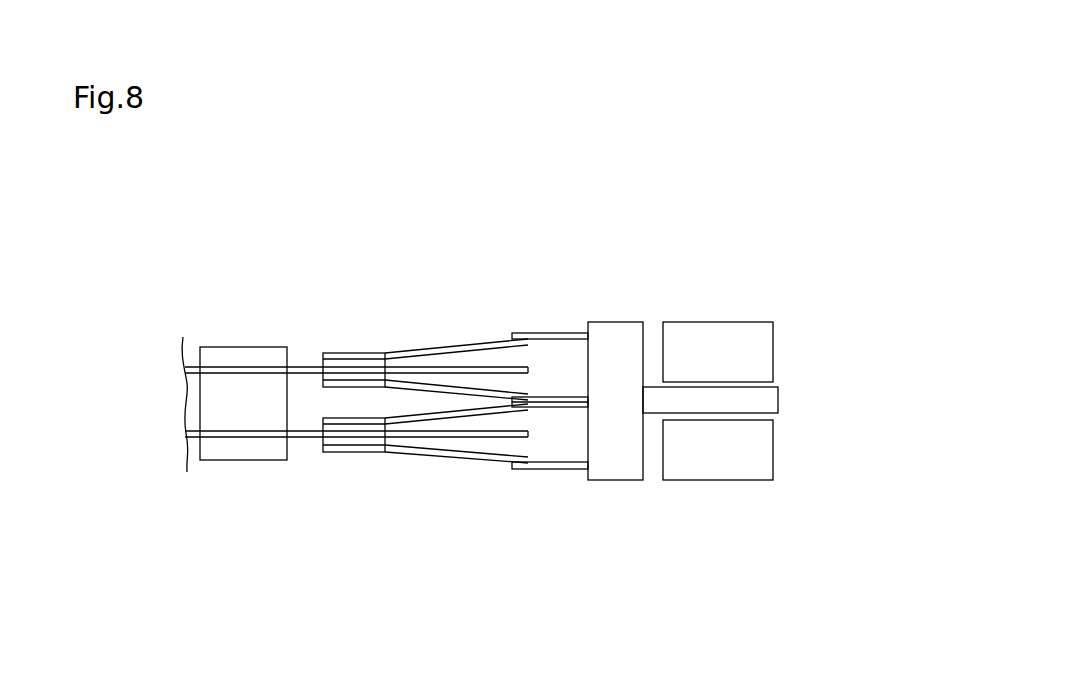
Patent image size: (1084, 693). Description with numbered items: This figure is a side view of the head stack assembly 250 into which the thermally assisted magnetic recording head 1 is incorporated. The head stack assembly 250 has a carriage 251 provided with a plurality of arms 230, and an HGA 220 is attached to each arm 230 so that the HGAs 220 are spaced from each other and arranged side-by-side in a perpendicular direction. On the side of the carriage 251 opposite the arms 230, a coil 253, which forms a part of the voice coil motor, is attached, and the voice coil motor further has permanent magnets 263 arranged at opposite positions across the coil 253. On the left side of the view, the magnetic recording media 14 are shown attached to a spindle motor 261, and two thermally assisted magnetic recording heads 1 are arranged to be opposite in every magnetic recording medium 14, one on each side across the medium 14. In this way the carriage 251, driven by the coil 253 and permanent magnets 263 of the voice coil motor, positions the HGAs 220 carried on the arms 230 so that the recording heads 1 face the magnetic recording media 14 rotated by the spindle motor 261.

The thermally assisted magnetic recording head 1 is at (319, 356).
The magnetic recording medium 14 is at (298, 366).
The HGA 220 is at (441, 347).
The arm 230 is at (527, 333).
The head stack assembly 250 is at (614, 296).
The carriage 251 is at (617, 472).
The coil 253 is at (768, 402).
The spindle motor 261 is at (222, 352).
The permanent magnet 263 is at (712, 322).